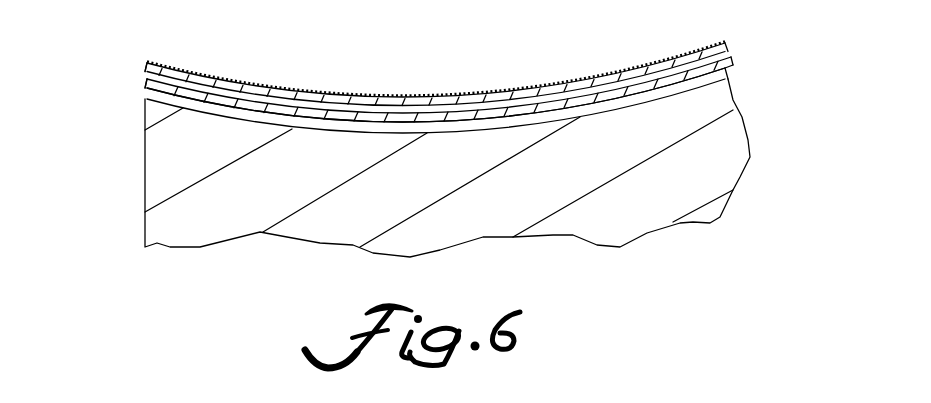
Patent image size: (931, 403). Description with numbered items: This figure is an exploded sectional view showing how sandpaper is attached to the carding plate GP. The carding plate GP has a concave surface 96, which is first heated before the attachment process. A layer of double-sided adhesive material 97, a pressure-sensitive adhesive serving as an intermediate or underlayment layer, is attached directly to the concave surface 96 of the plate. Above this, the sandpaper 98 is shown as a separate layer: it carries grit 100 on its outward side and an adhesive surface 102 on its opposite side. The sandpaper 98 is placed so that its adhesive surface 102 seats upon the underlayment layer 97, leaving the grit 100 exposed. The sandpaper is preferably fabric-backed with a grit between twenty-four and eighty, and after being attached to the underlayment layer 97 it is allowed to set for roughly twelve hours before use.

The concave surface 96 is at (730, 77).
The double-sided adhesive material 97 is at (733, 60).
The sandpaper 98 is at (723, 44).
The grit 100 is at (655, 30).
The adhesive surface 102 is at (147, 73).
The carding plate GP is at (735, 160).